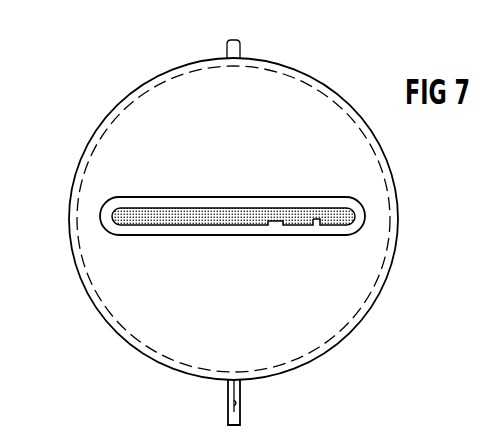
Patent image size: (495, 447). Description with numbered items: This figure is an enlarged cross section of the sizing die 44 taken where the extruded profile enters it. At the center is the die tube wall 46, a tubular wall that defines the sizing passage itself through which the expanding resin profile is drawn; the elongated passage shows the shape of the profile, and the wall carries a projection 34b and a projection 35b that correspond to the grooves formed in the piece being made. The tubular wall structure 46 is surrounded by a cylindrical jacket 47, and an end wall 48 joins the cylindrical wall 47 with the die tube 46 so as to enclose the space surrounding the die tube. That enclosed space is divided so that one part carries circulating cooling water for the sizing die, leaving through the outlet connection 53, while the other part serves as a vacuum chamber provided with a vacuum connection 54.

The sizing die 44 is at (382, 300).
The die tube wall 46 is at (147, 197).
The cylindrical jacket 47 is at (153, 337).
The end wall 48 is at (325, 313).
The projection 34b is at (277, 224).
The projection 35b is at (345, 210).
The outlet connection 53 is at (241, 414).
The vacuum connection 54 is at (235, 393).